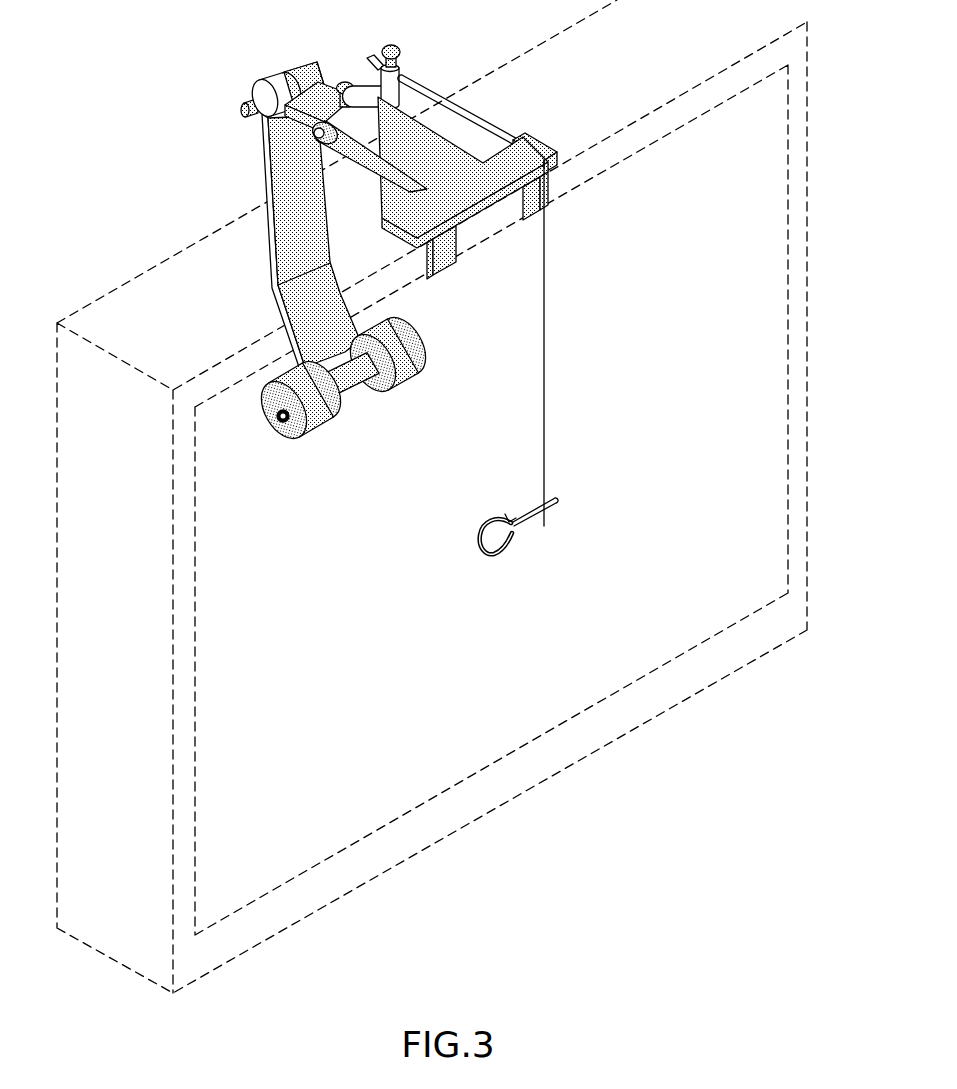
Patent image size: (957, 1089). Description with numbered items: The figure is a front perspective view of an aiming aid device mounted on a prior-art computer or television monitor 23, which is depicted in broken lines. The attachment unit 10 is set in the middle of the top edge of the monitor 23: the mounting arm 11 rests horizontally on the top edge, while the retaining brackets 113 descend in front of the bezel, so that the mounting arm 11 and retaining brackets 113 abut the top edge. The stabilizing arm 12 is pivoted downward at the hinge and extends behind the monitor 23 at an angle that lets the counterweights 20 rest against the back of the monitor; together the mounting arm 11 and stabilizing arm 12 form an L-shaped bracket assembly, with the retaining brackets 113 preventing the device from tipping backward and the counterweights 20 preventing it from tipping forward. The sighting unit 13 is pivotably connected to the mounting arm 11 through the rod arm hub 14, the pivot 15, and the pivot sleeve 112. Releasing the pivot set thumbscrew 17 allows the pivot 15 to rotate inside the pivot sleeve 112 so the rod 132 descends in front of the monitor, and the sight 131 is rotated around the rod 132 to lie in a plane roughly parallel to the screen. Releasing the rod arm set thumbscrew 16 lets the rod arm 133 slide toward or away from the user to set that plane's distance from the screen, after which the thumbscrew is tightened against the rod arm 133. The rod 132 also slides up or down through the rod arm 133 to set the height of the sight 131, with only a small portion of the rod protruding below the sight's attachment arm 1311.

The attachment unit 10 is at (234, 88).
The mounting arm 11 is at (423, 172).
The stabilizing arm 12 is at (290, 240).
The sighting unit 13 is at (598, 373).
The rod arm hub 14 is at (400, 79).
The pivot 15 is at (377, 90).
The rod arm set thumbscrew 16 is at (396, 47).
The pivot set thumbscrew 17 is at (340, 82).
The counterweights 20 is at (393, 389).
The monitor 23 is at (765, 202).
The pivot sleeve 112 is at (338, 118).
The retaining brackets 113 is at (522, 218).
The sight 131 is at (499, 556).
The rod 132 is at (547, 450).
The rod arm 133 is at (483, 123).
The attachment arm 1311 is at (530, 510).